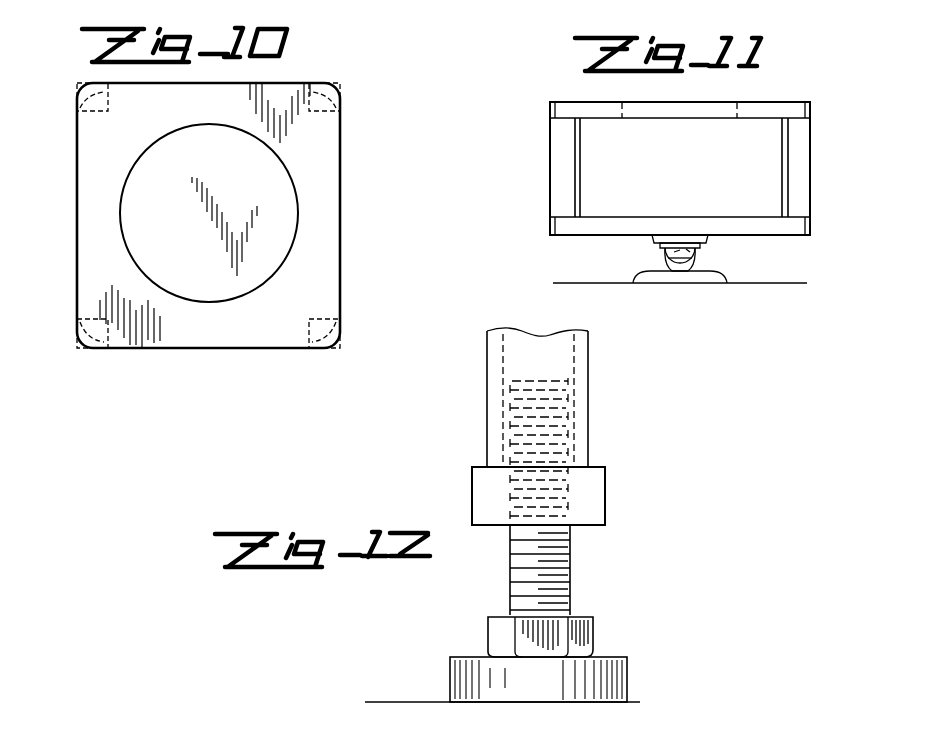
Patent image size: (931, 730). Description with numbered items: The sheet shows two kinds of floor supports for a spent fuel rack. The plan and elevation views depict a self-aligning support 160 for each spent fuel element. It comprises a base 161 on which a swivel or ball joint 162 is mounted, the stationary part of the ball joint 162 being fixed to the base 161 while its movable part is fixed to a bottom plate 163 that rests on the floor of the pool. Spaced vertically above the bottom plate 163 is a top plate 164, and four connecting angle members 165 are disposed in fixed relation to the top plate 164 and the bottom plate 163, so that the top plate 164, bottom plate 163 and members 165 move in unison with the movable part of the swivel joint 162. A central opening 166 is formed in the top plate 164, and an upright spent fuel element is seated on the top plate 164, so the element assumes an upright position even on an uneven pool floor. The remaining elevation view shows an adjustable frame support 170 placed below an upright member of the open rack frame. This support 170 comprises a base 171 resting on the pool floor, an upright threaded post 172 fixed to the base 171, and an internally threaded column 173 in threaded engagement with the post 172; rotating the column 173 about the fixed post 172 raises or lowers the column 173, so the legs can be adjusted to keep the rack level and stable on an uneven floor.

In FIG. 10, the self-aligning support 160 is at (352, 162).
In FIG. 11, the self-aligning support 160 is at (824, 118).
In FIG. 10, the base 161 is at (207, 274).
In FIG. 11, the base 161 is at (554, 224).
In FIG. 11, the ball joint 162 is at (700, 253).
In FIG. 11, the bottom plate 163 is at (640, 272).
In FIG. 10, the top plate 164 is at (328, 236).
In FIG. 11, the top plate 164 is at (790, 102).
In FIG. 10, the connecting angle members 165 is at (76, 126).
In FIG. 11, the connecting angle members 165 is at (556, 167).
In FIG. 10, the central opening 166 is at (298, 216).
In FIG. 11, the central opening 166 is at (630, 102).
In FIG. 12, the adjustable frame support 170 is at (612, 463).
In FIG. 12, the base 171 is at (620, 666).
In FIG. 12, the threaded post 172 is at (566, 555).
In FIG. 12, the internally threaded column 173 is at (590, 387).